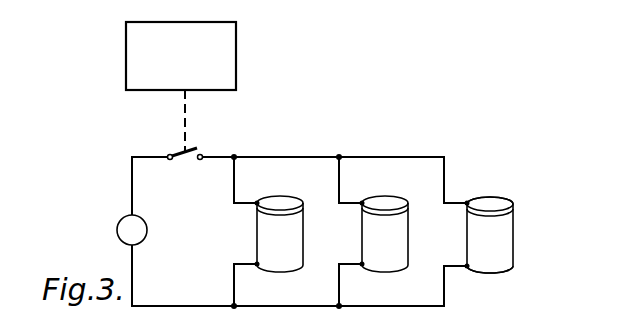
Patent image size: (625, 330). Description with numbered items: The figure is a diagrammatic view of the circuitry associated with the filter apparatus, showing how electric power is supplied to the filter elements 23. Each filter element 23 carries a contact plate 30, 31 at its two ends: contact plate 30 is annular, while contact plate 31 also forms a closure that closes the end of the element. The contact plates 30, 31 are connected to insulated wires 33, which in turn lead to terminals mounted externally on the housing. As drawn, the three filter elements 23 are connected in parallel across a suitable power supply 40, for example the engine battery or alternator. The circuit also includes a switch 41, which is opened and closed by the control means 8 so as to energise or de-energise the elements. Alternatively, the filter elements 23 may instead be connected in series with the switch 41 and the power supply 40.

The control means 8 is at (186, 68).
The filter element 23 is at (292, 248).
The contact plate 30 is at (506, 271).
The contact plate 31 is at (500, 209).
The insulated wire 33 is at (373, 157).
The power supply 40 is at (123, 231).
The switch 41 is at (179, 152).